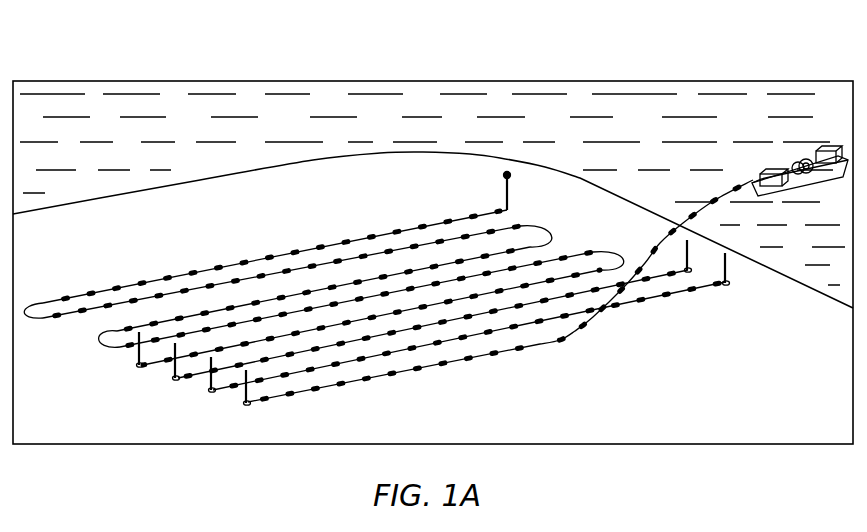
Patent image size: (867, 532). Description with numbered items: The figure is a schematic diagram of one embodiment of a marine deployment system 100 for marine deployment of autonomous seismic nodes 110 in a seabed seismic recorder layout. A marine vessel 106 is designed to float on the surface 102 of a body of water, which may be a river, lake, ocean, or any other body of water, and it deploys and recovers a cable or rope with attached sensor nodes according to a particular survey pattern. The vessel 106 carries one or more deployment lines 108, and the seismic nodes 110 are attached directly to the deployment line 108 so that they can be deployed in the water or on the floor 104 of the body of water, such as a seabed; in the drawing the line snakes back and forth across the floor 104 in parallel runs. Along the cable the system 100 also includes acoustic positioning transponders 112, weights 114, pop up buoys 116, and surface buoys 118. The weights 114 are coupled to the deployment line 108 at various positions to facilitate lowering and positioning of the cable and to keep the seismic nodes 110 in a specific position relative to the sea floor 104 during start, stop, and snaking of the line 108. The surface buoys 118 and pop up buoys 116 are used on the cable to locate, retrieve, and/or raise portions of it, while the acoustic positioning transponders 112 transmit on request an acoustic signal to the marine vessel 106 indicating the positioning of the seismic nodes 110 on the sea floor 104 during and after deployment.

The marine deployment system 100 is at (110, 50).
The surface 102 is at (677, 127).
The floor 104 is at (348, 180).
The marine vessel 106 is at (815, 150).
The deployment line 108 is at (723, 188).
The seismic nodes 110 is at (431, 367).
The acoustic positioning transponders 112 is at (138, 285).
The weights 114 is at (97, 342).
The pop up buoys 116 is at (726, 256).
The surface buoys 118 is at (502, 170).